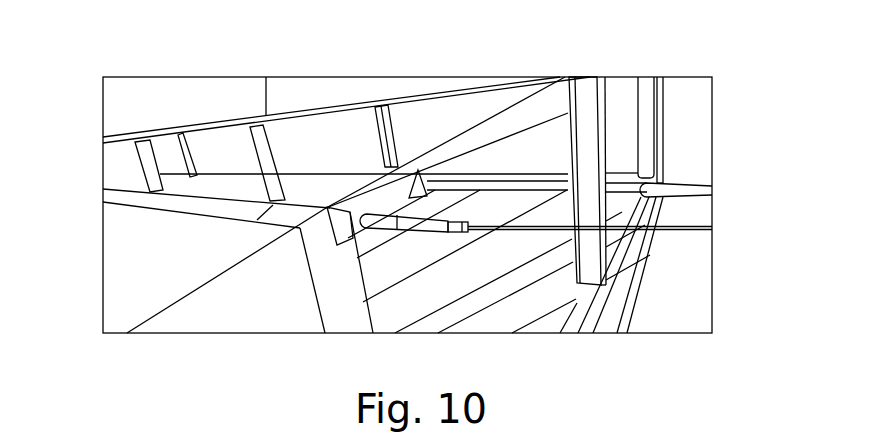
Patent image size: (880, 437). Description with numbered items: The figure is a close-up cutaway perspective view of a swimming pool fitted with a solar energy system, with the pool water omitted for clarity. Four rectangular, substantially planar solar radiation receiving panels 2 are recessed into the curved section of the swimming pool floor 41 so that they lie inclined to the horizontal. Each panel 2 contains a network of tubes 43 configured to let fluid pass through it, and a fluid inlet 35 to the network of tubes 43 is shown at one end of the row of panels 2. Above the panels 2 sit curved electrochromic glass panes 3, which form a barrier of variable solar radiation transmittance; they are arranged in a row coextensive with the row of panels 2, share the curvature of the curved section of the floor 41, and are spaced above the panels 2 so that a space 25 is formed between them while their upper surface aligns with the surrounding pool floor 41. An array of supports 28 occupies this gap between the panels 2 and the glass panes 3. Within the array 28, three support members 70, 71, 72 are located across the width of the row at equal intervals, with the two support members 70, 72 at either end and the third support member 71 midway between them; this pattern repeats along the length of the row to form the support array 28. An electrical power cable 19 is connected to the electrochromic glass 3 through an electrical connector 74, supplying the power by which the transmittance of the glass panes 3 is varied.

The solar radiation receiving panel 2 is at (527, 288).
The electrochromic glass pane 3 is at (237, 162).
The electrical power cable 19 is at (683, 230).
The space 25 is at (622, 131).
The array of supports 28 is at (383, 137).
The fluid inlet 35 is at (712, 188).
The swimming pool floor 41 is at (175, 268).
The network of tubes 43 is at (495, 178).
The support member 70 is at (348, 308).
The support member 71 is at (588, 265).
The support member 72 is at (643, 93).
The electrical connector 74 is at (404, 208).